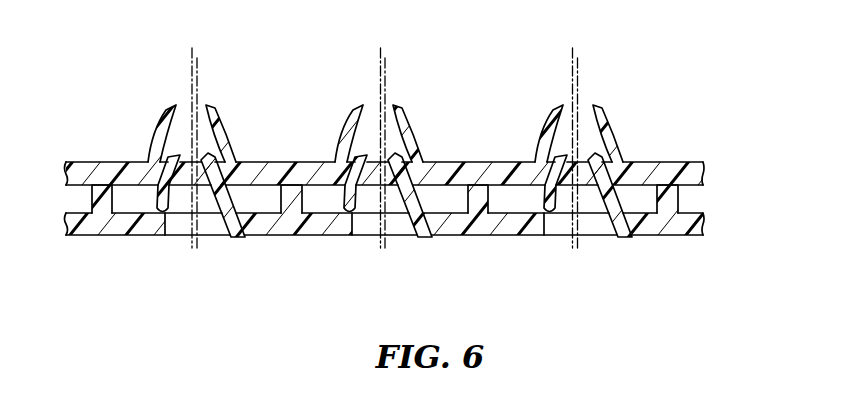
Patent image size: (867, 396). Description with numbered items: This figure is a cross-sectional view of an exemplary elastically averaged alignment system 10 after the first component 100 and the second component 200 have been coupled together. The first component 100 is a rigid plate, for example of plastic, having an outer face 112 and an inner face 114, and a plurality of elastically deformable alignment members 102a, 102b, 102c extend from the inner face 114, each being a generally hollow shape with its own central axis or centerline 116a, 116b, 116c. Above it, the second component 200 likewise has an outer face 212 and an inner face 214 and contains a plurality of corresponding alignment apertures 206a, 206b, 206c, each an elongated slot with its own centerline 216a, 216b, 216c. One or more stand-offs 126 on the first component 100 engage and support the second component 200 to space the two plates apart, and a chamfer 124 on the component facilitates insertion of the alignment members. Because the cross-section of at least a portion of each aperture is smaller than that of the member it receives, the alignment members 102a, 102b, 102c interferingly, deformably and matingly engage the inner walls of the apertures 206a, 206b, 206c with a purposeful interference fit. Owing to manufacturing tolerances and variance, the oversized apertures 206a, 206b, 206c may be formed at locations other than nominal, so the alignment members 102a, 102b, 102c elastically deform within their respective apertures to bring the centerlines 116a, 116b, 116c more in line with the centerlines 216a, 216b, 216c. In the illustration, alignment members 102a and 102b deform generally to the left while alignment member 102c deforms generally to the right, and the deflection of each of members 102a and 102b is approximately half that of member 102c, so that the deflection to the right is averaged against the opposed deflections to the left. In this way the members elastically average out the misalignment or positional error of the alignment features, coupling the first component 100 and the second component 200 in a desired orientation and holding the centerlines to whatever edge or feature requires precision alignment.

The elastically averaged alignment system 10 is at (690, 97).
The first component 100 is at (709, 225).
The outer face 112 is at (703, 238).
The inner face 114 is at (693, 205).
The centerline 116a is at (197, 80).
The centerline 116b is at (385, 77).
The centerline 116c is at (572, 70).
The chamfer 124 is at (227, 236).
The stand-off 126 is at (93, 191).
The alignment member 102a is at (244, 194).
The alignment member 102b is at (428, 198).
The alignment member 102c is at (619, 199).
The second component 200 is at (709, 173).
The outer face 212 is at (690, 191).
The inner face 214 is at (702, 162).
The centerline 216a is at (191, 64).
The centerline 216b is at (380, 63).
The centerline 216c is at (578, 82).
The alignment aperture 206a is at (178, 190).
The alignment aperture 206b is at (397, 189).
The alignment aperture 206c is at (588, 189).